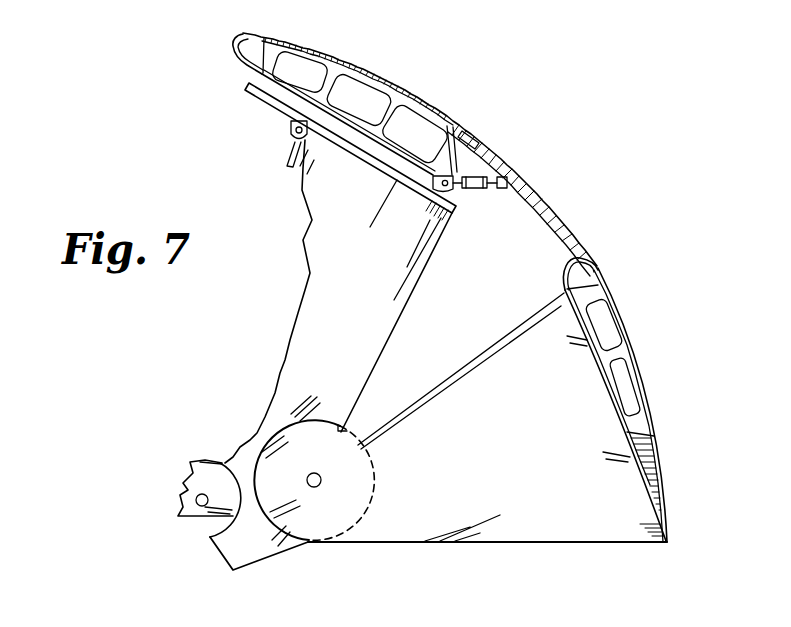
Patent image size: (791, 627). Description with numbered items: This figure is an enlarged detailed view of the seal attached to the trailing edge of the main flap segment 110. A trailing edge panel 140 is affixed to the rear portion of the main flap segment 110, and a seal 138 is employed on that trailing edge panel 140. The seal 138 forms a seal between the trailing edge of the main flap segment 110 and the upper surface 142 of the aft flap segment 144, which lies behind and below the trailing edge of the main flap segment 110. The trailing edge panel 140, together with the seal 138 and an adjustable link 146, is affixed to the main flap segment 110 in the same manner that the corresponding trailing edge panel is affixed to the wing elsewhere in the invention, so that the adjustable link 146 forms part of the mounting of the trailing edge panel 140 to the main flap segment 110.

The main flap segment 110 is at (497, 148).
The trailing edge panel 140 is at (552, 209).
The adjustable link 146 is at (481, 190).
The seal 138 is at (598, 276).
The upper surface 142 is at (636, 333).
The aft flap segment 144 is at (660, 386).